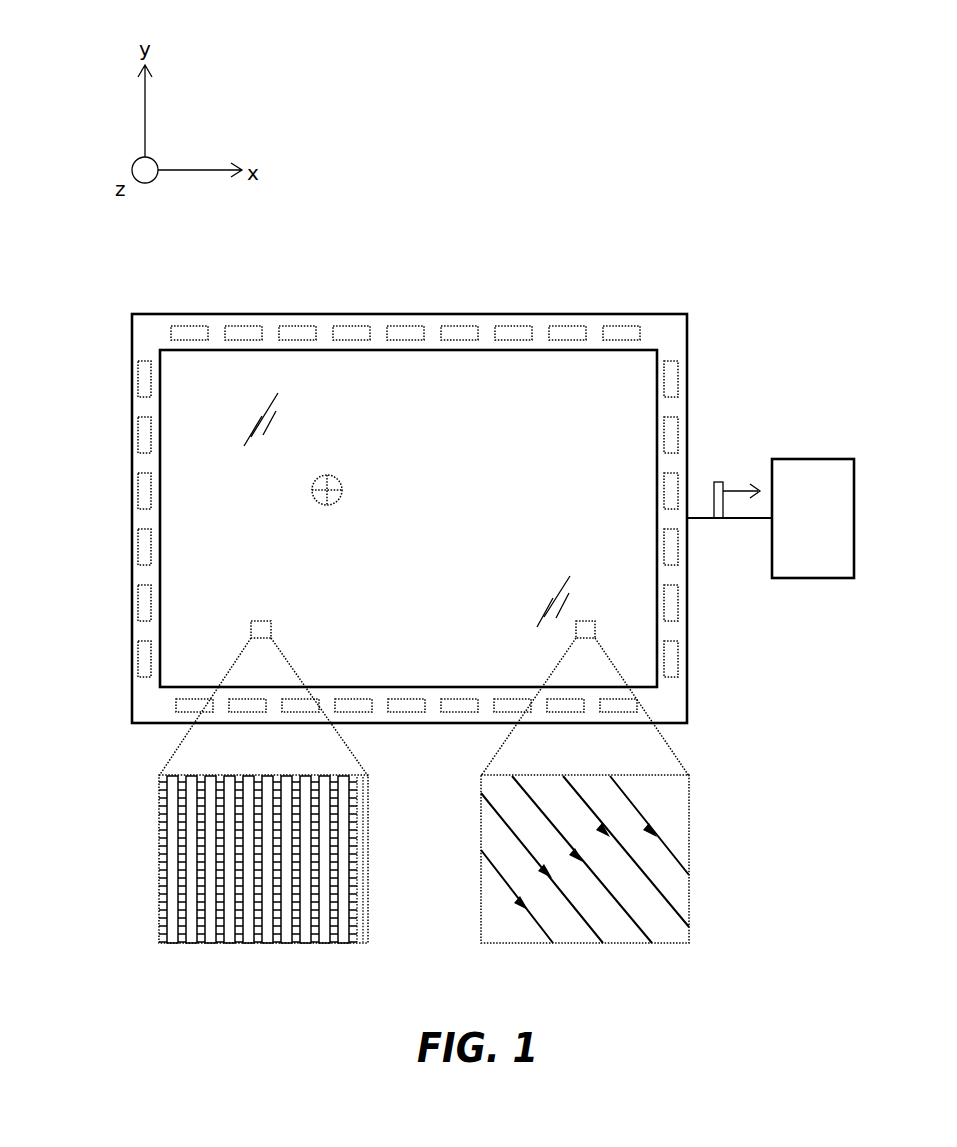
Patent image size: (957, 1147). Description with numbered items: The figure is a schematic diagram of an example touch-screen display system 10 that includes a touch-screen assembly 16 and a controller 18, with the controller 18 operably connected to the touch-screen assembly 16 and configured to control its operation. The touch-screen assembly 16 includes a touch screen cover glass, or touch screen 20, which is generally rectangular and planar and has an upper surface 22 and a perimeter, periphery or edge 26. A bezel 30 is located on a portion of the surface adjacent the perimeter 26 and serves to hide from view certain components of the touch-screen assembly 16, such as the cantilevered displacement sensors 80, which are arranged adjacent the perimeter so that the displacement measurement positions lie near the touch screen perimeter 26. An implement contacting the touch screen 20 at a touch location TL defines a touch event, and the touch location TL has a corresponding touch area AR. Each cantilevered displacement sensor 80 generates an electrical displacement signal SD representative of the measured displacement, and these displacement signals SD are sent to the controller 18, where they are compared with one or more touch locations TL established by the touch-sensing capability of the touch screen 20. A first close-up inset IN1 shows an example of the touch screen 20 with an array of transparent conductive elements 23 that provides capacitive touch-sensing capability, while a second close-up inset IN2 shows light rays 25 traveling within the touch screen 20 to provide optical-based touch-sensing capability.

The touch-screen display system 10 is at (652, 228).
The touch-screen assembly 16 is at (304, 309).
The controller 18 is at (824, 532).
The touch screen cover glass 20 is at (621, 388).
The upper surface 22 is at (511, 424).
The transparent conductive elements 23 is at (172, 801).
The light rays 25 is at (650, 823).
The perimeter 26 is at (687, 359).
The bezel 30 is at (160, 327).
The cantilevered displacement sensors 80 is at (140, 372).
The touch location TL is at (330, 487).
The touch area AR is at (313, 497).
The displacement signal SD is at (716, 482).
The first close-up inset IN1 is at (153, 856).
The second close-up inset IN2 is at (704, 834).